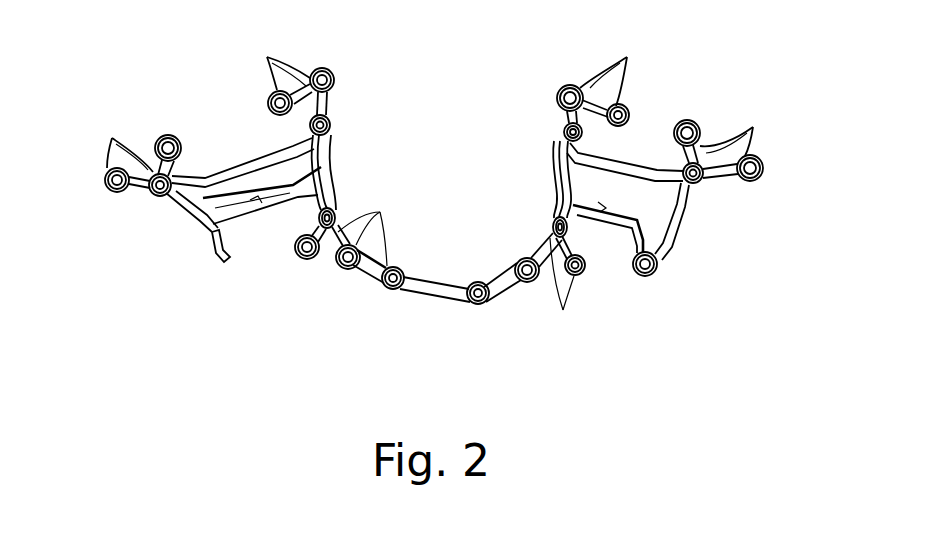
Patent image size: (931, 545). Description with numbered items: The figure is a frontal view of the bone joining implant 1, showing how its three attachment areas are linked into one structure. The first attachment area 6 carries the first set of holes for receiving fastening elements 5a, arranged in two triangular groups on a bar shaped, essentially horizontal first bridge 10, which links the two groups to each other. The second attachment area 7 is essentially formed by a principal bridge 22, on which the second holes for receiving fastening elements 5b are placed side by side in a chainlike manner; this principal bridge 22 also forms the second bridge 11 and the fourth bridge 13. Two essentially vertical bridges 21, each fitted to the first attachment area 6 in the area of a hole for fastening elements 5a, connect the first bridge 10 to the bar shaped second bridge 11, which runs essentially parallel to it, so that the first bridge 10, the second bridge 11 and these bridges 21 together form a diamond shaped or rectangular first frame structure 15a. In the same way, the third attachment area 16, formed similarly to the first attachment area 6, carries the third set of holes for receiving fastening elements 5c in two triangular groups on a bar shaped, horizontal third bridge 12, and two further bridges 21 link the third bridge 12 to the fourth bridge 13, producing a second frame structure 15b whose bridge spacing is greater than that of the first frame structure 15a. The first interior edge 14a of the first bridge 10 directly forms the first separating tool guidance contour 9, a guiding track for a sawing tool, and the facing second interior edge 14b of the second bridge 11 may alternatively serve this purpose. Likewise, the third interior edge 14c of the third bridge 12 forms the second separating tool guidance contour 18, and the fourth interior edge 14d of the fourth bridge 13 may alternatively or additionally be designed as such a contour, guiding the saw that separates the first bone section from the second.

The bone joining implant 1 is at (625, 175).
The first attachment area 6 is at (238, 174).
The first holes for receiving fastening elements 5a is at (216, 111).
The second holes for receiving fastening elements 5b is at (380, 213).
The third holes for receiving fastening elements 5c is at (664, 106).
The second attachment area 7 is at (313, 285).
The first separating tool guidance contour 9 is at (333, 160).
The first bridge 10 is at (233, 172).
The second bridge 11 is at (230, 228).
The third bridge 12 is at (627, 167).
The fourth bridge 13 is at (627, 228).
The first interior edge 14a is at (182, 225).
The second interior edge 14b is at (258, 200).
The third interior edge 14c is at (717, 221).
The fourth interior edge 14d is at (600, 205).
The first frame structure 15a is at (160, 212).
The second frame structure 15b is at (545, 152).
The third attachment area 16 is at (714, 105).
The second separating tool guidance contour 18 is at (640, 183).
The bridges 21 is at (327, 188).
The principal bridge 22 is at (437, 298).